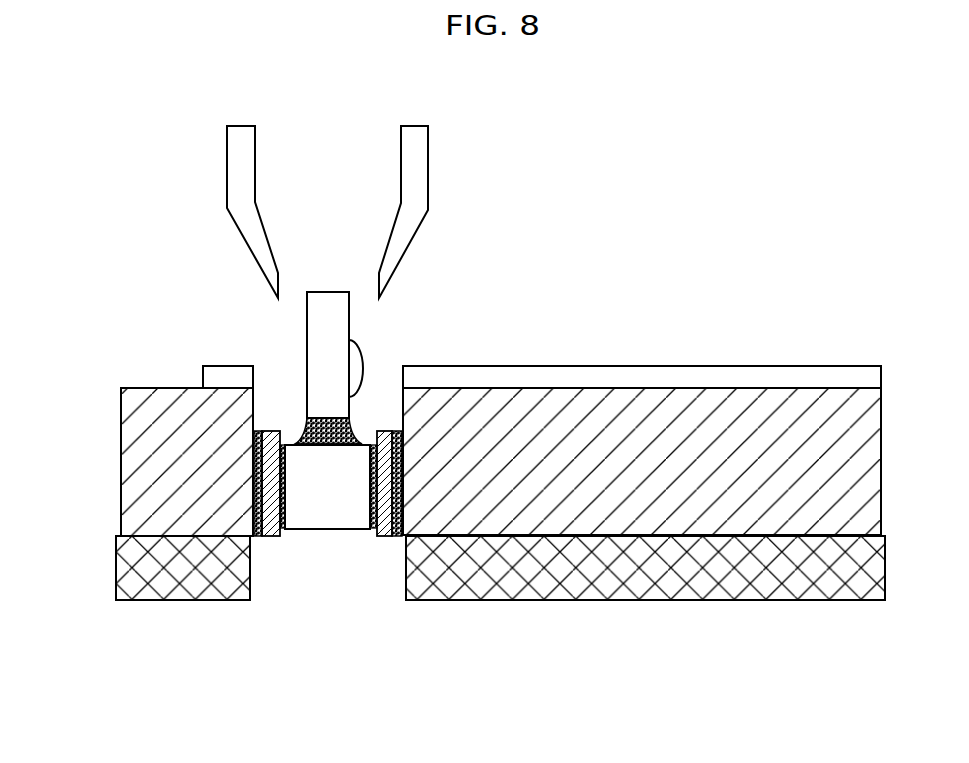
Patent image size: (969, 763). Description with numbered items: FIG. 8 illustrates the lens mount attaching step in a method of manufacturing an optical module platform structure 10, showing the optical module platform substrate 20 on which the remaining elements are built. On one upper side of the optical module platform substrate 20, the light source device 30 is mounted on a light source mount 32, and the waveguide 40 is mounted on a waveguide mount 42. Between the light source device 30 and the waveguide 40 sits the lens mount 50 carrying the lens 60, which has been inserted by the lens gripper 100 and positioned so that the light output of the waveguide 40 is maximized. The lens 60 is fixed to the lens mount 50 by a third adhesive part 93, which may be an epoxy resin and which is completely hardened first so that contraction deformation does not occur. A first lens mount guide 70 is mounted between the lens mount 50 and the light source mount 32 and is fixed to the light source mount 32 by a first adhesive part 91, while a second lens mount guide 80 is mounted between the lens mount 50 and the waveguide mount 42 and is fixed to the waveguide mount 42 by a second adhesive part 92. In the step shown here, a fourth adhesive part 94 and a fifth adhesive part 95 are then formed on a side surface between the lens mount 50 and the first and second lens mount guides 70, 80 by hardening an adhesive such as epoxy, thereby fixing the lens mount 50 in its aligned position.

The optical module platform structure 10 is at (114, 148).
The optical module platform substrate 20 is at (125, 568).
The light source device 30 is at (213, 370).
The light source mount 32 is at (135, 456).
The waveguide 40 is at (655, 380).
The waveguide mount 42 is at (787, 428).
The lens mount 50 is at (323, 525).
The lens 60 is at (328, 298).
The first lens mount guide 70 is at (272, 428).
The second lens mount guide 80 is at (380, 432).
The first adhesive part 91 is at (258, 540).
The second adhesive part 92 is at (370, 540).
The third adhesive part 93 is at (302, 430).
The fourth adhesive part 94 is at (285, 532).
The fifth adhesive part 95 is at (395, 540).
The lens gripper 100 is at (240, 130).